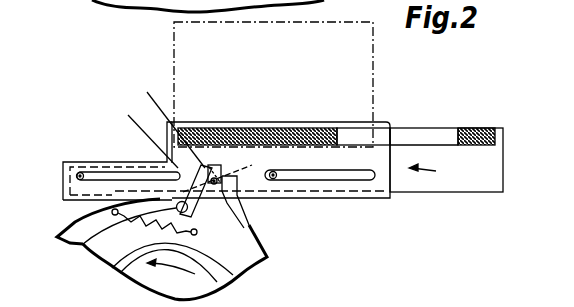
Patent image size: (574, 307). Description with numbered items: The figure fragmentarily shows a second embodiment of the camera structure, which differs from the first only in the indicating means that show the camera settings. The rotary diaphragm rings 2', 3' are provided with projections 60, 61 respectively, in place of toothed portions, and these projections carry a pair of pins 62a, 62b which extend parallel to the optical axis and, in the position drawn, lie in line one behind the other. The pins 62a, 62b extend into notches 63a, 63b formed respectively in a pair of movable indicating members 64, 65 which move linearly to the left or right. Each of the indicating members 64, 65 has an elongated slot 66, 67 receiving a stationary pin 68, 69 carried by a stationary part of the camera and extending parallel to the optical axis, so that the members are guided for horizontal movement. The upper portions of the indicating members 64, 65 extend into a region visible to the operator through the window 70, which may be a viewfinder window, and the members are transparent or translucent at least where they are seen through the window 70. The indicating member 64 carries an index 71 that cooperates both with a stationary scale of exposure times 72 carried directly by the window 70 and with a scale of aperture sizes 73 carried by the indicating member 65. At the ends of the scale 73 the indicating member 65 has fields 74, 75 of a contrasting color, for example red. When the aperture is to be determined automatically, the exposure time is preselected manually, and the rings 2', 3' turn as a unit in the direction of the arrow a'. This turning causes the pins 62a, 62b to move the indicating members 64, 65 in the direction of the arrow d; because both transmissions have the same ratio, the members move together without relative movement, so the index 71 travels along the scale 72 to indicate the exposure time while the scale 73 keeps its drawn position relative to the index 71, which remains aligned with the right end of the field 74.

The projection 60 is at (238, 197).
The projection 61 is at (226, 180).
The pin 62a is at (116, 129).
The pin 62b is at (116, 129).
The notch 63a is at (141, 118).
The notch 63b is at (141, 118).
The movable indicating member 64 is at (375, 197).
The movable indicating member 65 is at (440, 193).
The elongated slot 66 is at (133, 172).
The elongated slot 67 is at (335, 181).
The stationary pin 68 is at (79, 173).
The stationary pin 69 is at (277, 172).
The window 70 is at (375, 60).
The index 71 is at (340, 125).
The scale of exposure times 72 is at (296, 110).
The scale of aperture sizes 73 is at (423, 128).
The field 74 is at (247, 128).
The field 75 is at (485, 128).
The rotary diaphragm ring 2' is at (164, 262).
The rotary diaphragm ring 3' is at (114, 221).
The arrow a' is at (171, 273).
The arrow d is at (424, 176).